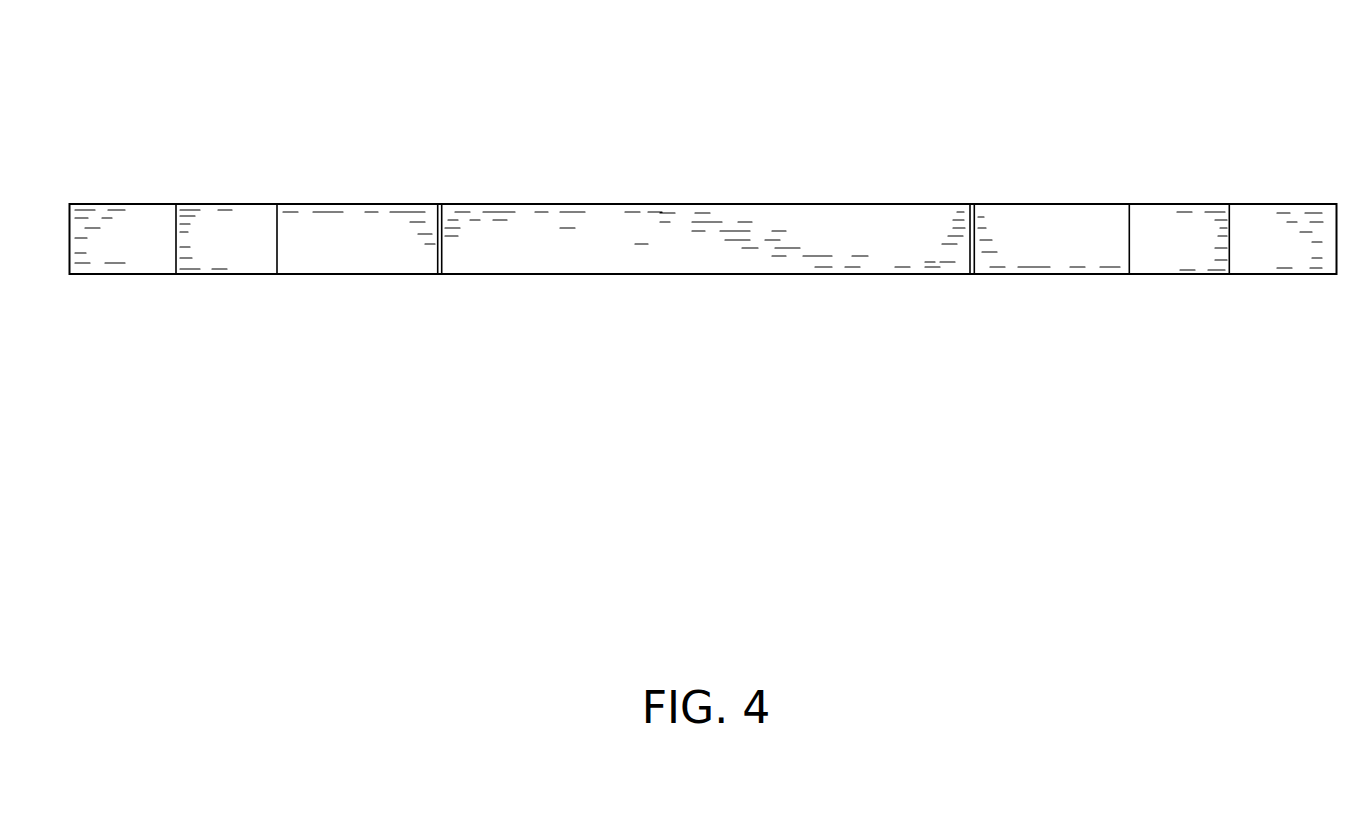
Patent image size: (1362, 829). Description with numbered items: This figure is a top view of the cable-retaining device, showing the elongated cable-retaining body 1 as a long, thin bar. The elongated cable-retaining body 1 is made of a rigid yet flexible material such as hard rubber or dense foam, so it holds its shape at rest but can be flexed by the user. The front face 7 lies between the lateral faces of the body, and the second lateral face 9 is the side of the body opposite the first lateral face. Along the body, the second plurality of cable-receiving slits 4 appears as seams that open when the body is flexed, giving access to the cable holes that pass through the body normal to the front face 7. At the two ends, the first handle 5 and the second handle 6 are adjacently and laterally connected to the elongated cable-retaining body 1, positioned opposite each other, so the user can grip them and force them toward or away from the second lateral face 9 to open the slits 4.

The elongated cable-retaining body 1 is at (275, 104).
The second plurality of cable-receiving slits 4 is at (440, 205).
The first handle 5 is at (148, 263).
The second handle 6 is at (1257, 263).
The front face 7 is at (528, 275).
The second lateral face 9 is at (633, 235).